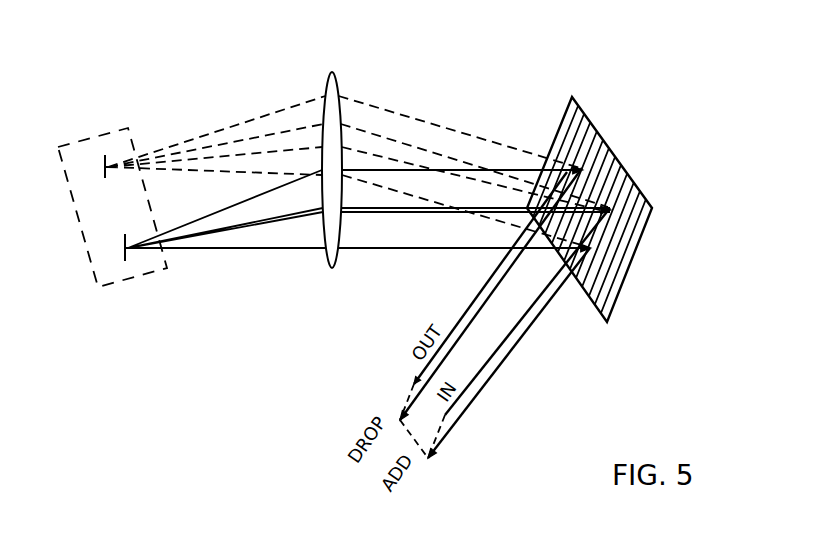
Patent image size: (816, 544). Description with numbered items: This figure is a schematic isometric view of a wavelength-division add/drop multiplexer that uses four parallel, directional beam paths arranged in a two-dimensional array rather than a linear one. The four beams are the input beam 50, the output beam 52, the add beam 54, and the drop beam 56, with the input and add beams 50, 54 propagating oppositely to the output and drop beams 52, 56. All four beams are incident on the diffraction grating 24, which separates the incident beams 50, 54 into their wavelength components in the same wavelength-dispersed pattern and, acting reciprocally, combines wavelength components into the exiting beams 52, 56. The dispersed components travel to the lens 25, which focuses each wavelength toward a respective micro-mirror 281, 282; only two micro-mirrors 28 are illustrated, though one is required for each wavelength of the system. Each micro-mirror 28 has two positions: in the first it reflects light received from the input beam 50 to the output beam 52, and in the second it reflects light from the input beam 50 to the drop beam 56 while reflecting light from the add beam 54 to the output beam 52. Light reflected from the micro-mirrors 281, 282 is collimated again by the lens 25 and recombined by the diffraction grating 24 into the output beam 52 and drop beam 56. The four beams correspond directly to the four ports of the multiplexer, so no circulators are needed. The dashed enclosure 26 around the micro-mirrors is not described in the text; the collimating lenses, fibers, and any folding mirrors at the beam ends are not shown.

The diffraction grating 24 is at (580, 113).
The lens 25 is at (338, 78).
The fiber housing 26 is at (88, 257).
The micro-mirrors 28 is at (143, 215).
The micro-mirror 281 is at (129, 260).
The micro-mirror 282 is at (108, 160).
The input beam 50 is at (543, 293).
The output beam 52 is at (512, 255).
The add beam 54 is at (512, 350).
The drop beam 56 is at (490, 302).